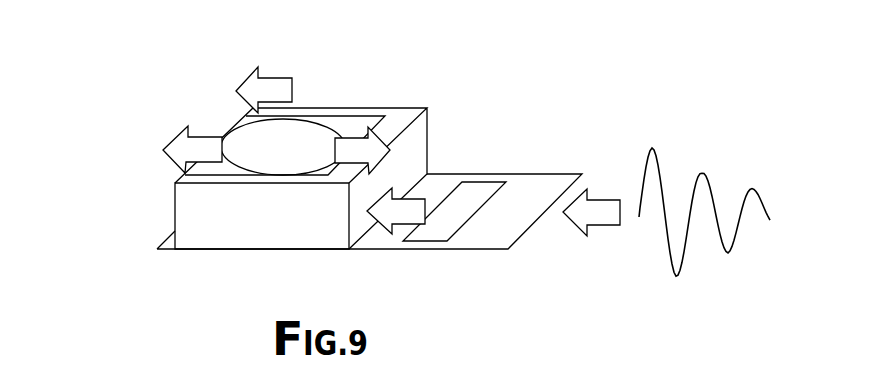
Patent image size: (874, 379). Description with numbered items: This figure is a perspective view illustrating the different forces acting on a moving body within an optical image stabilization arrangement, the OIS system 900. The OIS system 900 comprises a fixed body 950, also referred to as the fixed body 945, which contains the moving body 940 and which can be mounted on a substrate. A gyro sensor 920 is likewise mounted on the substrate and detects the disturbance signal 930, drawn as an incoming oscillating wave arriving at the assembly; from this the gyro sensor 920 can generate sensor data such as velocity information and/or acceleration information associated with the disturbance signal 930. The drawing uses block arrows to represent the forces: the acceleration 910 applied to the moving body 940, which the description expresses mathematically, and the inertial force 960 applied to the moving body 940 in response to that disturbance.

The OIS system 900 is at (420, 72).
The acceleration 910 is at (242, 85).
The gyro sensor 920 is at (476, 213).
The disturbance signal 930 is at (610, 188).
The moving body 940 is at (272, 163).
The fixed body 945 is at (174, 207).
The fixed body 950 is at (167, 137).
The inertial force 960 is at (397, 146).